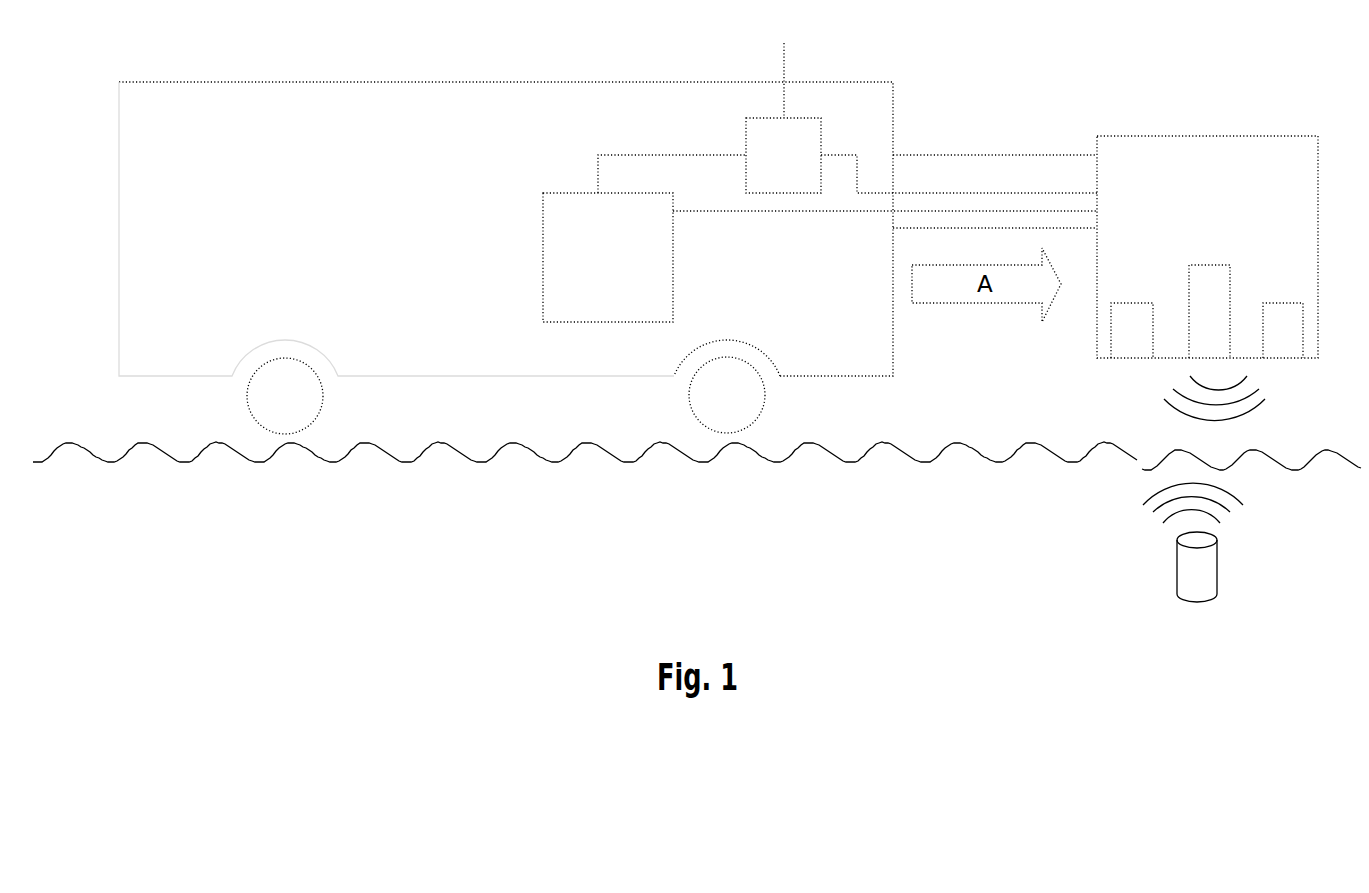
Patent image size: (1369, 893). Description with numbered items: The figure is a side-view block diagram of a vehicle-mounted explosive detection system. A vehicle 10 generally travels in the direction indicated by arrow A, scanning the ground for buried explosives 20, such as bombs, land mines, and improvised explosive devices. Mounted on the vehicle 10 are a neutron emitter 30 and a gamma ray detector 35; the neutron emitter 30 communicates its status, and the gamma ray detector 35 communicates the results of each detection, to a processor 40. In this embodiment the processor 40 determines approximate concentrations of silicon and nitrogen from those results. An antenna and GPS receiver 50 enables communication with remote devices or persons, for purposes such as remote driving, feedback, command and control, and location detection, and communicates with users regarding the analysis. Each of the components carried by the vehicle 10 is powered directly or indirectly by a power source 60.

The vehicle 10 is at (343, 209).
The buried explosives 20 is at (1160, 571).
The neutron emitter 30 is at (1212, 265).
The gamma ray detector 35 is at (1128, 303).
The processor 40 is at (799, 168).
The antenna and GPS receiver 50 is at (785, 63).
The power source 60 is at (628, 272).